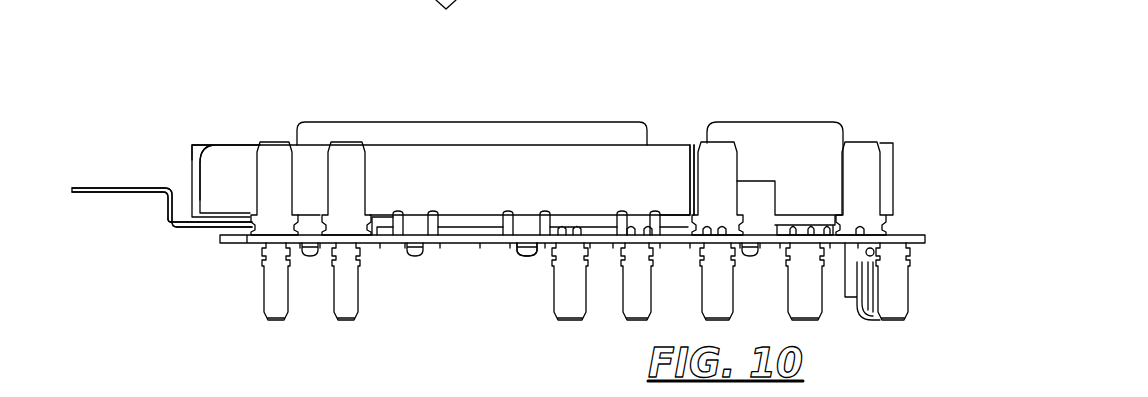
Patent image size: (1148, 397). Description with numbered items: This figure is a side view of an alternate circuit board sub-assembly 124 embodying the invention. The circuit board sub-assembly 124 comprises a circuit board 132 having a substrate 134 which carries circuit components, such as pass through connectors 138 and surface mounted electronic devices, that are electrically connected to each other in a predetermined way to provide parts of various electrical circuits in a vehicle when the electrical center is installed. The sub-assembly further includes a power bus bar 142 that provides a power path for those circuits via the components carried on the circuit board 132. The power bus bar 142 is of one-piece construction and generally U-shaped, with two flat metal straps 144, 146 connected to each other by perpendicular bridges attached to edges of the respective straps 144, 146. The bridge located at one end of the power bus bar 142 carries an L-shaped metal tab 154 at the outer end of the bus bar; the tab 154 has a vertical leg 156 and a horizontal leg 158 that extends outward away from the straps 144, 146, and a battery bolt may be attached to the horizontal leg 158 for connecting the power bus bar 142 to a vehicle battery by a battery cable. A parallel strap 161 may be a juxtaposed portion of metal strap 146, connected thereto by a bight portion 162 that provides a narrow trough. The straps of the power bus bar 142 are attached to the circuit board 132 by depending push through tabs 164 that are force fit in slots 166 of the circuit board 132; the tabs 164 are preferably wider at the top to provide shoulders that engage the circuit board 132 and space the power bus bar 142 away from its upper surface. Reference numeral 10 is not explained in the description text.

The electrical connector 10 is at (412, 68).
The circuit board sub-assembly 124 is at (562, 122).
The circuit board 132 is at (572, 292).
The substrate 134 is at (490, 243).
The pass through connectors 138 is at (270, 295).
The power bus bar 142 is at (248, 130).
The flat metal strap 144 is at (887, 157).
The flat metal strap 146 is at (665, 163).
The L-shaped metal tab 154 is at (138, 172).
The vertical leg 156 is at (162, 207).
The horizontal leg 158 is at (93, 187).
The parallel strap 161 is at (553, 128).
The bight portion 162 is at (798, 140).
The push through tab 164 is at (420, 257).
The slot 166 is at (513, 237).